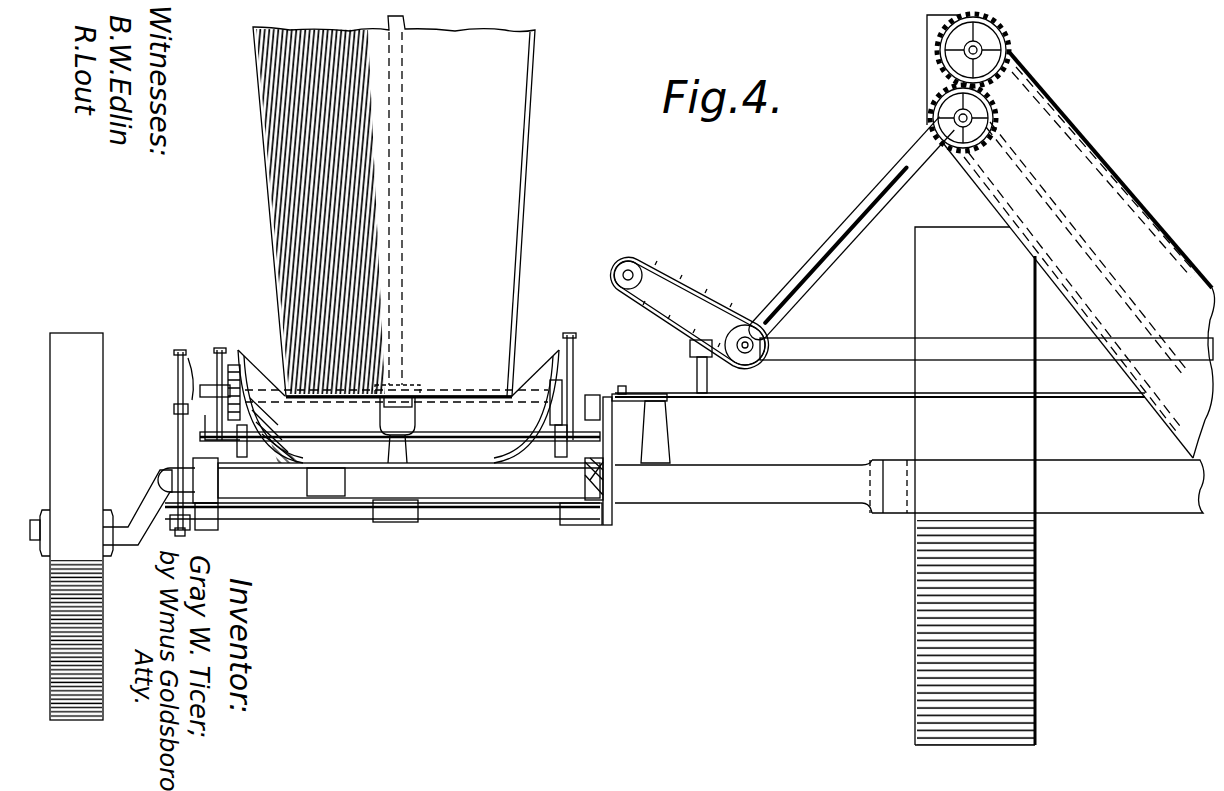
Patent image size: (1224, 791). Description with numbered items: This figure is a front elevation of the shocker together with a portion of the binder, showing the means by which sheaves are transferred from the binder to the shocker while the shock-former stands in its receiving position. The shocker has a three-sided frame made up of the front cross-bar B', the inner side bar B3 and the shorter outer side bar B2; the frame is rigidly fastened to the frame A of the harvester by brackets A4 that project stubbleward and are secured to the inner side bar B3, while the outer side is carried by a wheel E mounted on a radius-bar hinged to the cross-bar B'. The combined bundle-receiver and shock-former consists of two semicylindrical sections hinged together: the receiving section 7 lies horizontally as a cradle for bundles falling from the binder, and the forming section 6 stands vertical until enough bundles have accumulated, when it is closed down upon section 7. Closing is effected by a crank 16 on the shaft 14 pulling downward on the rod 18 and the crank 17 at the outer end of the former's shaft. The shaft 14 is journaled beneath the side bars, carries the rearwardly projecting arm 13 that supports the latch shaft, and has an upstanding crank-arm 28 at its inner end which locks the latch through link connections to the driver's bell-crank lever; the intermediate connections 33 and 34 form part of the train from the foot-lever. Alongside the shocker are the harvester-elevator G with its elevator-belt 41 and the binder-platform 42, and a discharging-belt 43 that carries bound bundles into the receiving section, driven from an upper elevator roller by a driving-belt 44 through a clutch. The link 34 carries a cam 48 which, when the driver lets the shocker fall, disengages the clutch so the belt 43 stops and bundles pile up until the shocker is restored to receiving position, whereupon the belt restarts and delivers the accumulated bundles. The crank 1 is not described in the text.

The forming section 6 is at (515, 178).
The receiving section 7 is at (258, 368).
The crank 17 is at (192, 356).
The rod 18 is at (176, 409).
The outer side bar B2 is at (207, 423).
The crank 1 is at (152, 495).
The crank 16 is at (193, 522).
The arm 13 is at (402, 522).
The front cross-bar B' is at (379, 508).
The shaft 14 is at (562, 520).
The inner side bar B3 is at (595, 408).
The crank-arm 28 is at (615, 493).
The link-and-lever connection 33 is at (640, 396).
The link 34 is at (829, 398).
The cam 48 is at (690, 348).
The discharging-belt 43 is at (690, 300).
The binder-platform 42 is at (850, 233).
The driving-belt 44 is at (890, 302).
The elevator-belt 41 is at (1100, 218).
The harvester-elevator G is at (940, 82).
The wheel E is at (83, 345).
The harvester frame A is at (1037, 486).
The bracket A4 is at (798, 498).